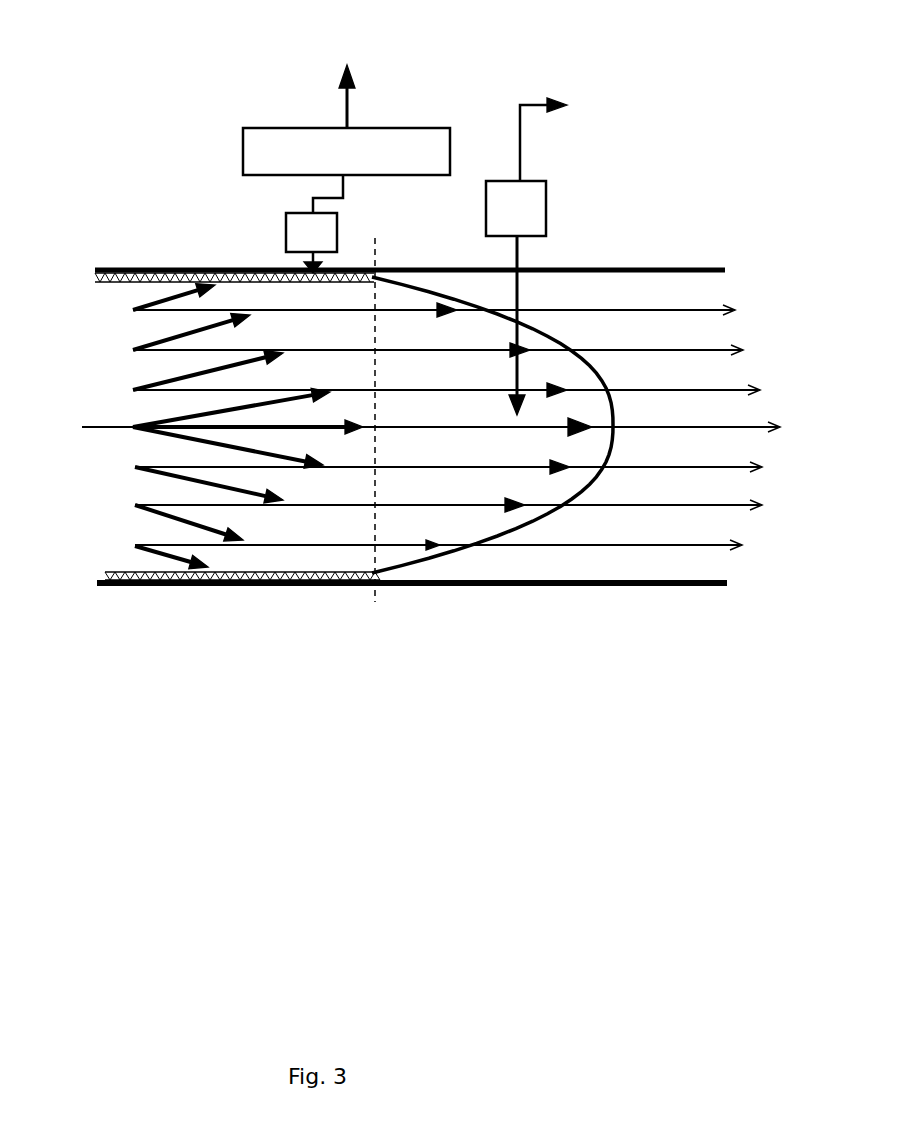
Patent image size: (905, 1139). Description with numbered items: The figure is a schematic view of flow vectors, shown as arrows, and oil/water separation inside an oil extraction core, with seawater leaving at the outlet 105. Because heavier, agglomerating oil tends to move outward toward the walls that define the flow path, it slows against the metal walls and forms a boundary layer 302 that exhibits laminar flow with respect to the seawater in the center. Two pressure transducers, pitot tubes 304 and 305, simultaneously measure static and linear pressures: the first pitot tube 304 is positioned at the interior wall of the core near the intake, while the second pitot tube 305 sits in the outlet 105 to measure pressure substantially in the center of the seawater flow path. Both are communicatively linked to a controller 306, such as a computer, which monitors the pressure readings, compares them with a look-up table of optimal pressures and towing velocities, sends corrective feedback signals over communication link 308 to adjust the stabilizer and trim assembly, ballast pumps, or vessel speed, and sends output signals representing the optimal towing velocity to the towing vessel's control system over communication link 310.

The outlet 105 is at (706, 378).
The boundary layer 302 is at (288, 572).
The pitot tube 304 is at (285, 245).
The pitot tube 305 is at (546, 206).
The controller 306 is at (243, 153).
The communication link 308 is at (533, 102).
The communication link 310 is at (343, 102).